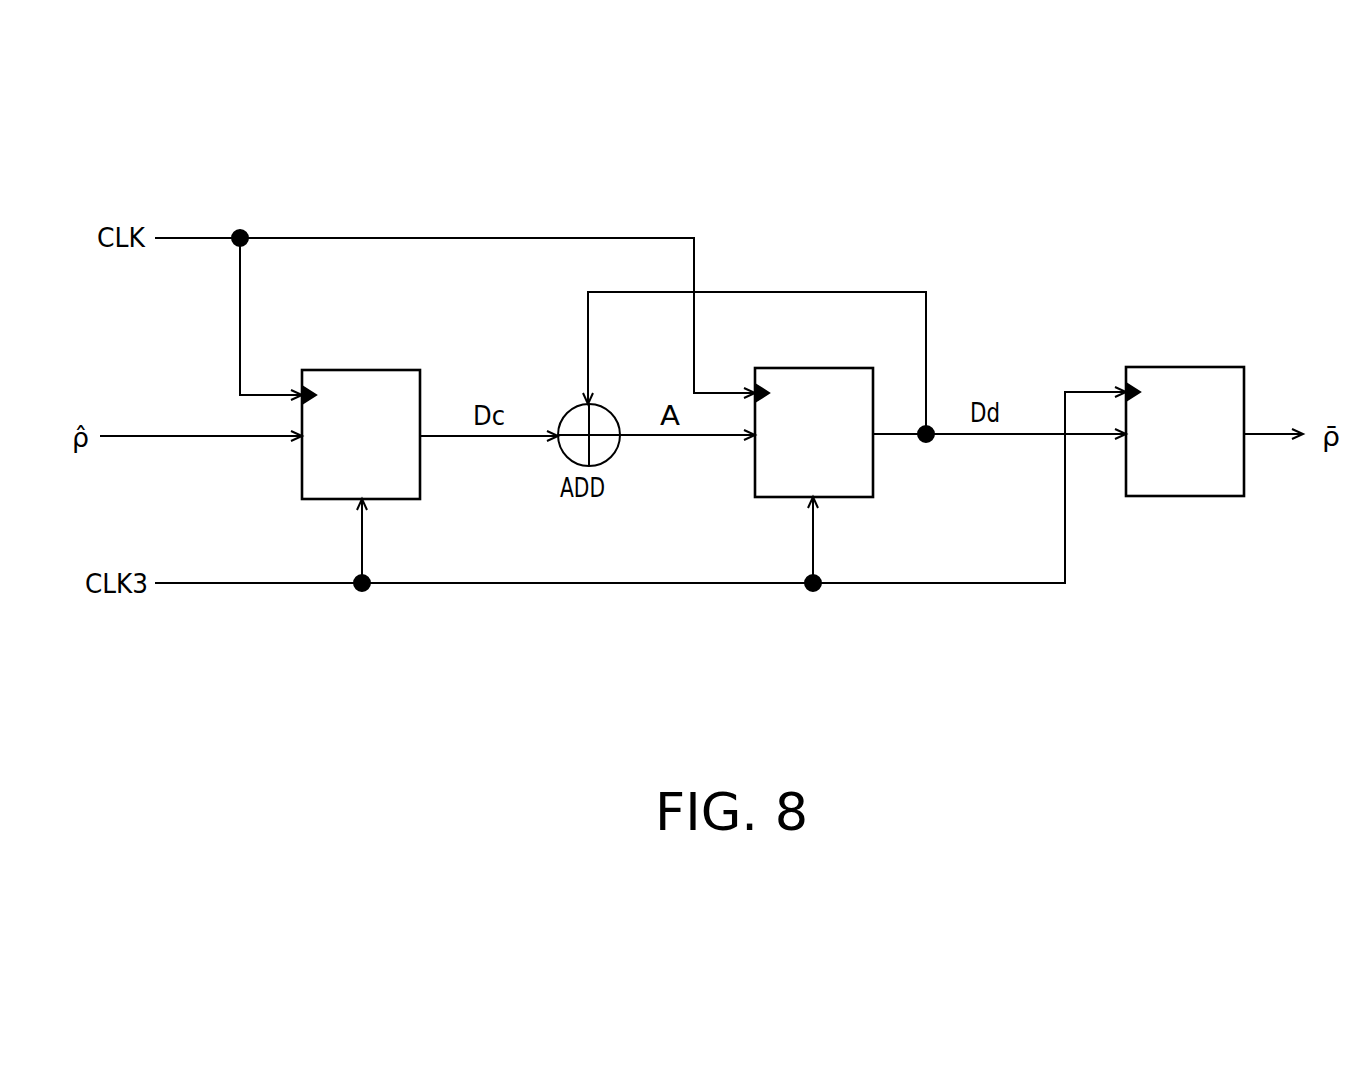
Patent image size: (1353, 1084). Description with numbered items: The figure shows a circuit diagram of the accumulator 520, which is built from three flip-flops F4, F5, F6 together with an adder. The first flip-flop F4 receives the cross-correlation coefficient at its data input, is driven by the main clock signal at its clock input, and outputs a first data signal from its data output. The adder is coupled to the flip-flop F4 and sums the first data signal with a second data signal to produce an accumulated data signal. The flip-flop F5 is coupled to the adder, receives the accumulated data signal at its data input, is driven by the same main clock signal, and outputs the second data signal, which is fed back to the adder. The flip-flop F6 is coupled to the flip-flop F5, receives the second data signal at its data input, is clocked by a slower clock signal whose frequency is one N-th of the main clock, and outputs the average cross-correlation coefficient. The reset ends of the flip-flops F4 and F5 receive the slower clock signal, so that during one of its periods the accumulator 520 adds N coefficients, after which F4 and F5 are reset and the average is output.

The accumulator 520 is at (1243, 157).
The flip-flop F4 is at (333, 370).
The flip-flop F5 is at (785, 368).
The flip-flop F6 is at (1157, 367).